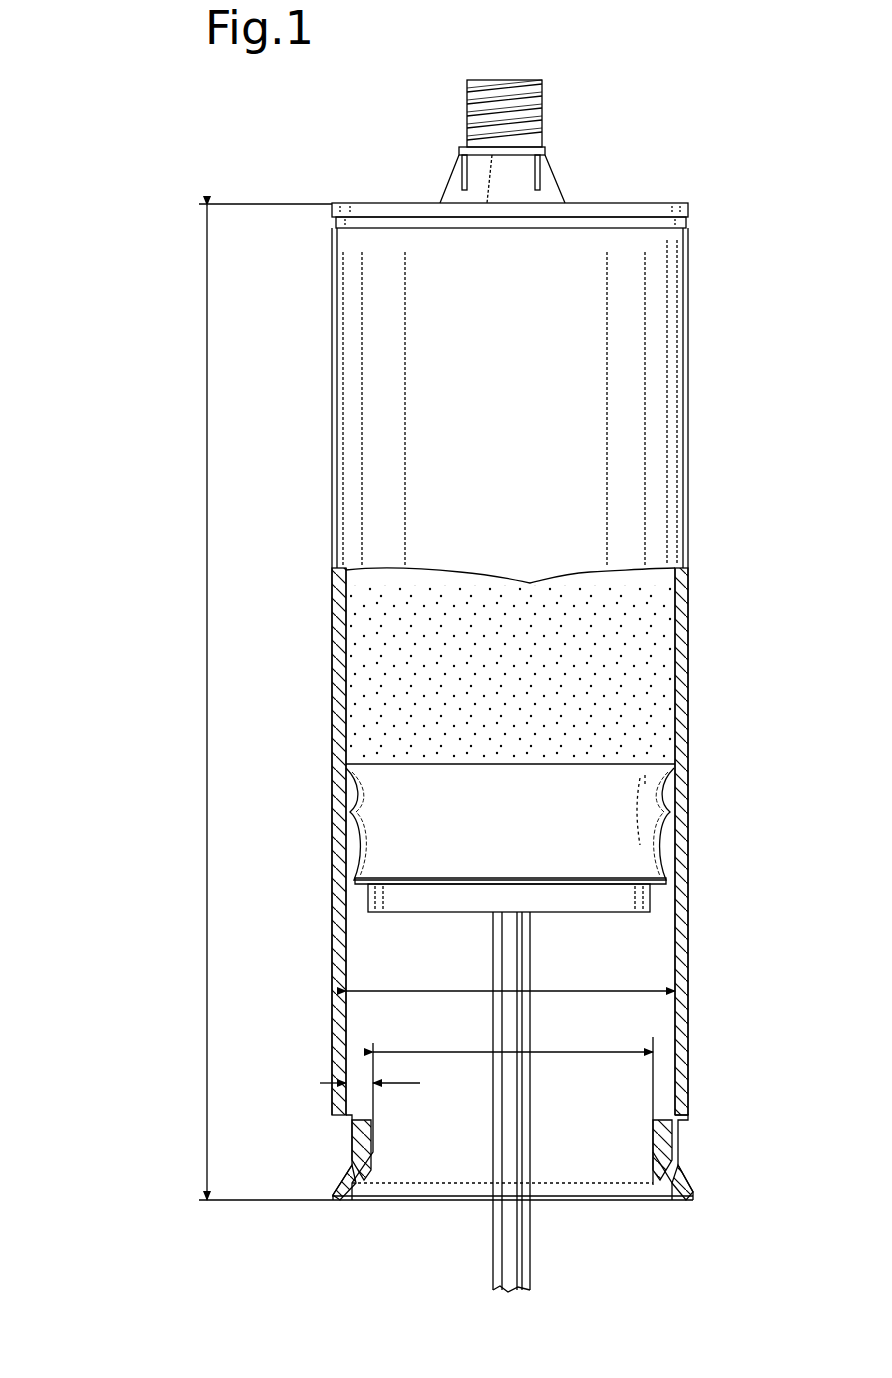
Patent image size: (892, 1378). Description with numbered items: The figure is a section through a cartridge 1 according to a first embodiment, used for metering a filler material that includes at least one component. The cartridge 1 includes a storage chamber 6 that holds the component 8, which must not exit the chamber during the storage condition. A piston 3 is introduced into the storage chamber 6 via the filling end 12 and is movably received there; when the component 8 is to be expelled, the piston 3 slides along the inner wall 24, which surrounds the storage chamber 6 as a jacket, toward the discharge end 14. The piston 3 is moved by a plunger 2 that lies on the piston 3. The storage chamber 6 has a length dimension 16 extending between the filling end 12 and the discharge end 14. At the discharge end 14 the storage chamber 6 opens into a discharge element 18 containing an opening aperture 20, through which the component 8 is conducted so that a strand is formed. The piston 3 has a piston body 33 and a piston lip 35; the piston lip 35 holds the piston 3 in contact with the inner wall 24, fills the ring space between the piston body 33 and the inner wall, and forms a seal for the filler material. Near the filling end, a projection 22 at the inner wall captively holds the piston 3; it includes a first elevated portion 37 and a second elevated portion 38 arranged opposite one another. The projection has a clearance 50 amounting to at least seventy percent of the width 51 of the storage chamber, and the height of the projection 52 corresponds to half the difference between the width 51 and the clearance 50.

The cartridge 1 is at (110, 246).
The plunger 2 is at (520, 1275).
The piston 3 is at (640, 827).
The storage chamber 6 is at (648, 600).
The component 8 is at (637, 667).
The filling end 12 is at (605, 1200).
The discharge end 14 is at (635, 204).
The length dimension 16 is at (207, 638).
The discharge element 18 is at (575, 107).
The opening aperture 20 is at (508, 80).
The projection 22 is at (662, 1140).
The inner wall 24 is at (355, 677).
The piston body 33 is at (575, 795).
The piston lip 35 is at (346, 780).
The first elevated portion 37 is at (350, 1185).
The second elevated portion 38 is at (693, 1172).
The clearance 50 is at (556, 1030).
The width 51 is at (570, 962).
The height of the projection 52 is at (322, 1080).